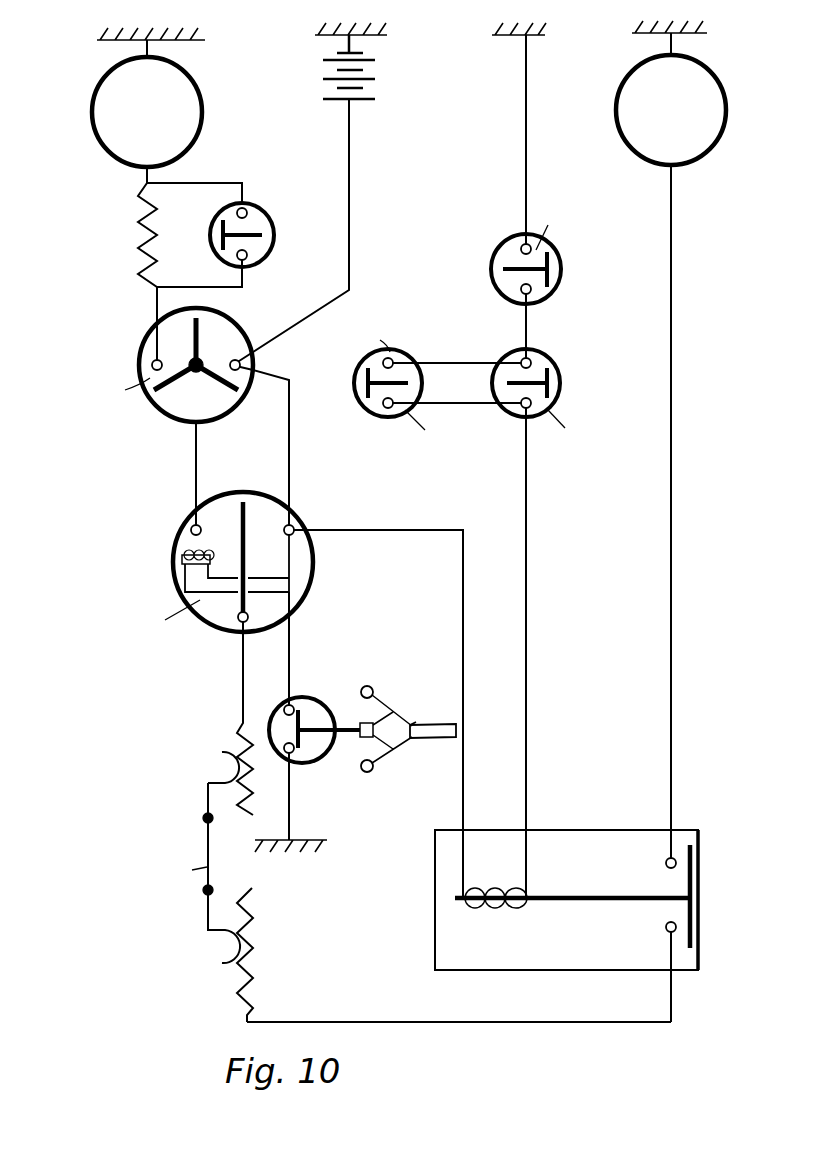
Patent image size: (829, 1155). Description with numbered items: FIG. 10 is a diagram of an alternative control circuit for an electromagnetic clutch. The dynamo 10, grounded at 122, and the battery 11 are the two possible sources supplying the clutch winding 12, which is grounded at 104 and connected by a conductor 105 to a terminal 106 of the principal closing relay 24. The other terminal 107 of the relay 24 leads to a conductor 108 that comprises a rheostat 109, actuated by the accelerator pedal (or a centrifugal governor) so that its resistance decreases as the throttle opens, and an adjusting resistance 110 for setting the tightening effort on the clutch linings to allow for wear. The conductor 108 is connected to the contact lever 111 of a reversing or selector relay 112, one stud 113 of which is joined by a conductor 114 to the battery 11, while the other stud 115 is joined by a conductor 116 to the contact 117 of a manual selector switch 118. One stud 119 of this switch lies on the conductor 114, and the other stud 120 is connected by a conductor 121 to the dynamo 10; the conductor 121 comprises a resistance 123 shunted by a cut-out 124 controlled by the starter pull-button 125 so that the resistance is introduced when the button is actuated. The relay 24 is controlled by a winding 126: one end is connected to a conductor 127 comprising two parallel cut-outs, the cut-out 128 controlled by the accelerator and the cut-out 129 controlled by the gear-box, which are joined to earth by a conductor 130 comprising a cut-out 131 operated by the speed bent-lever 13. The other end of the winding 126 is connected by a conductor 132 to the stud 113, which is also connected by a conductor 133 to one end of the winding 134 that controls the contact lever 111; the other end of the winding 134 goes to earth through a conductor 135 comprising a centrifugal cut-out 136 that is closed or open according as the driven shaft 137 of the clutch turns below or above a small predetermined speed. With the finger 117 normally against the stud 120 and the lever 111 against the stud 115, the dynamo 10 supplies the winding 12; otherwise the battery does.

The dynamo 10 is at (203, 108).
The battery 11 is at (382, 83).
The clutch winding 12 is at (614, 85).
The speed bent-lever 13 is at (497, 248).
The relay 24 is at (588, 828).
The ground 104 is at (673, 43).
The conductor 105 is at (673, 395).
The terminal 106 is at (667, 860).
The terminal 107 is at (668, 932).
The conductor 108 is at (243, 692).
The rheostat 109 is at (216, 966).
The adjusting resistance 110 is at (212, 768).
The contact lever 111 is at (250, 510).
The selector relay 112 is at (170, 576).
The stud 113 is at (293, 526).
The conductor 114 is at (350, 183).
The stud 115 is at (191, 527).
The conductor 116 is at (196, 455).
The contact 117 is at (200, 362).
The manual selector switch 118 is at (157, 410).
The stud 119 is at (238, 361).
The stud 120 is at (152, 363).
The conductor 121 is at (150, 178).
The ground 122 is at (149, 44).
The resistance 123 is at (138, 233).
The cut-out 124 is at (265, 216).
The pull-button of the starter 125 is at (262, 238).
The winding 126 is at (508, 912).
The conductor 127 is at (528, 588).
The cut-out 128 is at (565, 383).
The cut-out 129 is at (388, 420).
The conductor 130 is at (526, 110).
The cut-out 131 is at (560, 262).
The conductor 132 is at (463, 628).
The conductor 133 is at (290, 563).
The winding 134 is at (180, 556).
The conductor 135 is at (291, 633).
The centrifugal cut-out 136 is at (312, 695).
The driven shaft of the clutch 137 is at (438, 723).